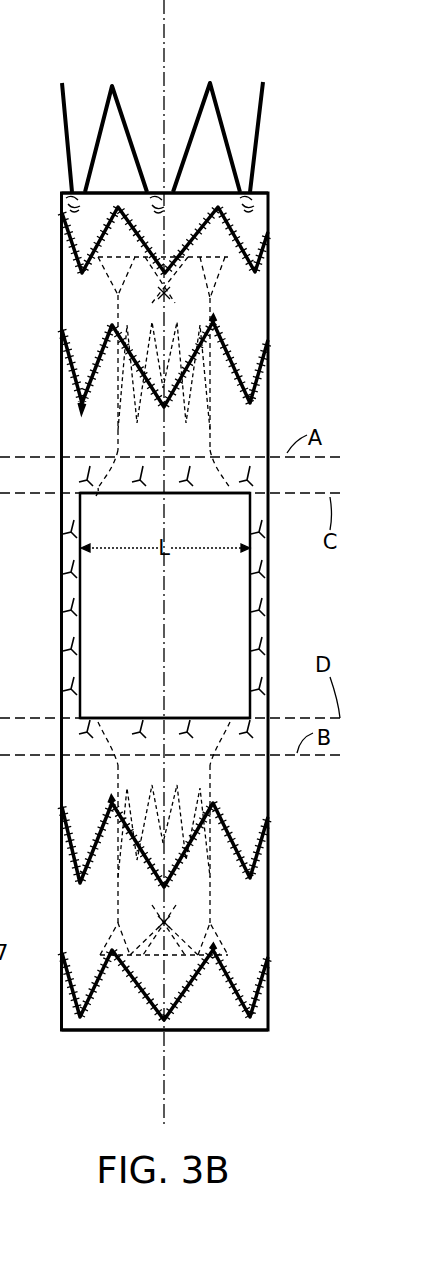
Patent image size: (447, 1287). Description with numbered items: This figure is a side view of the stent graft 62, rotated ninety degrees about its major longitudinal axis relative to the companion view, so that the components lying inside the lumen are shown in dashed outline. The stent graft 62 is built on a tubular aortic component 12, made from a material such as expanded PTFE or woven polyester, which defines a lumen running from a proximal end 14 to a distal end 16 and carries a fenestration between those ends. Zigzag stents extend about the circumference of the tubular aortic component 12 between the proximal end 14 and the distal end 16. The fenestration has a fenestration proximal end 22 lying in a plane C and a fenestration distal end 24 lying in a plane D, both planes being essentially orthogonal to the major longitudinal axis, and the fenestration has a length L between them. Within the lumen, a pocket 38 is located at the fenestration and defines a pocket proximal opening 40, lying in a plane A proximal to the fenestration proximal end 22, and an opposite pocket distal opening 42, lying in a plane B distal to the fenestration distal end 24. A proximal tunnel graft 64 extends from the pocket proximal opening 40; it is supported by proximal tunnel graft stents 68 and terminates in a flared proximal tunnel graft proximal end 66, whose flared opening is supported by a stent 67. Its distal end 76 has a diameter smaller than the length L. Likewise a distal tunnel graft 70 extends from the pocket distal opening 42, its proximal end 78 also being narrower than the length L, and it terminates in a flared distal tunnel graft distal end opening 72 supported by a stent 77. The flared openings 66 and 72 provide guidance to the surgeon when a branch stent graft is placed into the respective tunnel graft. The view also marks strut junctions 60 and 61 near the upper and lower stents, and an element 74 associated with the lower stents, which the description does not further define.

The tubular aortic component 12 is at (68, 298).
The proximal end 14 is at (107, 192).
The distal end 16 is at (240, 1032).
The fenestration proximal end 22 is at (218, 495).
The fenestration distal end 24 is at (127, 718).
The pocket 38 is at (152, 617).
The pocket proximal opening 40 is at (137, 457).
The pocket distal opening 42 is at (196, 765).
The first struts junction 60 is at (160, 293).
The second struts junction 61 is at (160, 922).
The stent graft 62 is at (82, 52).
The proximal tunnel graft 64 is at (212, 83).
The proximal tunnel graft proximal end 66 is at (163, 213).
The stent 67 is at (200, 273).
The proximal tunnel graft stents 68 is at (200, 375).
The distal tunnel graft 70 is at (253, 743).
The distal tunnel graft distal end opening 72 is at (223, 953).
The lower middle zigzag ring 74 is at (207, 865).
The distal end 76 is at (194, 458).
The stent 77 is at (203, 935).
The proximal end 78 is at (213, 788).